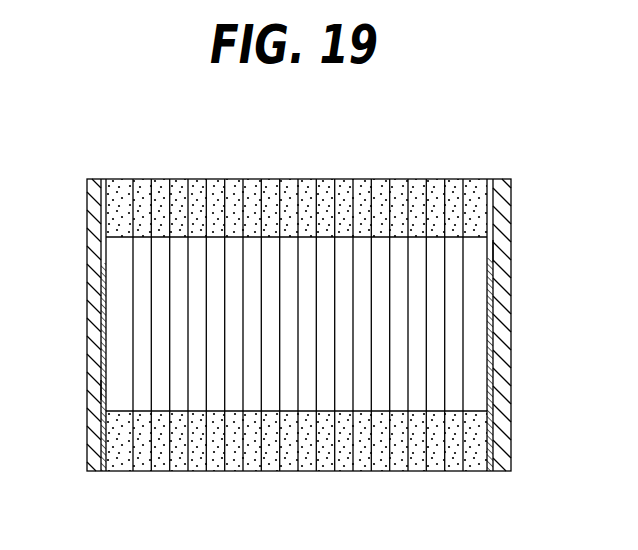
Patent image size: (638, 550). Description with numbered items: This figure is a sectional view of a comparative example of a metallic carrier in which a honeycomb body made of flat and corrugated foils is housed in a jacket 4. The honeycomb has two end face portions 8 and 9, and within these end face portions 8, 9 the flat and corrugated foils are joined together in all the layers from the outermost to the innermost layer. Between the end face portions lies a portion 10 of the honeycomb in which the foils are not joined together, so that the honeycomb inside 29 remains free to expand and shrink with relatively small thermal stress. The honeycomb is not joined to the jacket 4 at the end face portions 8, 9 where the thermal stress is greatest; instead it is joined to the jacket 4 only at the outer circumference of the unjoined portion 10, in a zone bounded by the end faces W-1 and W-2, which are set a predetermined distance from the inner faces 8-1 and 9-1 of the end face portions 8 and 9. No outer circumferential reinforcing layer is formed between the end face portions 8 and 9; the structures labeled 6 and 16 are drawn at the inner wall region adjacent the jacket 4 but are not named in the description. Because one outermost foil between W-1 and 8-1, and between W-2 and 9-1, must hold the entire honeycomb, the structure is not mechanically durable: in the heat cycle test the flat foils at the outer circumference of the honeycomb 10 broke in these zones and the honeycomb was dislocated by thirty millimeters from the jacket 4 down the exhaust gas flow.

The jacket 4 is at (92, 220).
The inner wall layer 6 is at (92, 337).
The end face portion 8 is at (349, 178).
The inner face of end face portion 8-1 is at (407, 235).
The end face portion 9 is at (343, 462).
The inner face of end face portion 9-1 is at (400, 413).
The honeycomb portion 10 is at (297, 297).
The inner wall layer 16 is at (500, 320).
The honeycomb inside 29 is at (147, 179).
The junction portion end face W-1 is at (500, 253).
The junction portion end face W-2 is at (104, 391).